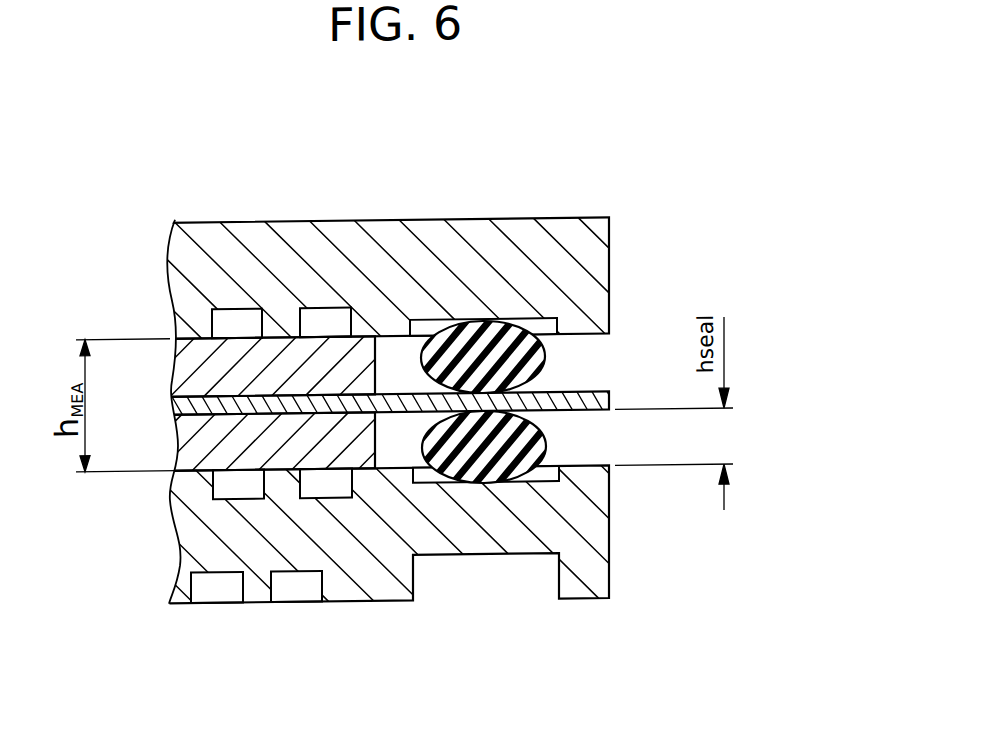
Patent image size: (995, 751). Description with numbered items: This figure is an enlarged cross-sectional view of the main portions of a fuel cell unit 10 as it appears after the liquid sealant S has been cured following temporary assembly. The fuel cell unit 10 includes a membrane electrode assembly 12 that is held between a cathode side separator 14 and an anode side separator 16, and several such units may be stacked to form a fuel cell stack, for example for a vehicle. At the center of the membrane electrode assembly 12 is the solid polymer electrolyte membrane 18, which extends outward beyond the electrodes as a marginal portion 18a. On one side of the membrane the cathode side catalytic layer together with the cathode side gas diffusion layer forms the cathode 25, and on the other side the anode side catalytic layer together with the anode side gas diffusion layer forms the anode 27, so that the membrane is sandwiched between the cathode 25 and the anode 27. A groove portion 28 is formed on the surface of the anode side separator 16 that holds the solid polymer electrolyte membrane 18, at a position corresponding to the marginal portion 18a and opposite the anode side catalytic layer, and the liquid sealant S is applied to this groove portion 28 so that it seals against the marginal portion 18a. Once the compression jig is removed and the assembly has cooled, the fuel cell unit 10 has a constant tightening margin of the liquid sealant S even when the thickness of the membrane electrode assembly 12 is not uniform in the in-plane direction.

The fuel cell unit 10 is at (368, 402).
The membrane electrode assembly 12 is at (374, 415).
The cathode side separator 14 is at (417, 240).
The anode side separator 16 is at (367, 587).
The solid polymer electrolyte membrane 18 is at (482, 483).
The marginal portion 18a is at (611, 400).
The cathode 25 is at (207, 347).
The anode 27 is at (197, 452).
The groove portion 28 is at (547, 326).
The liquid sealant S is at (400, 414).